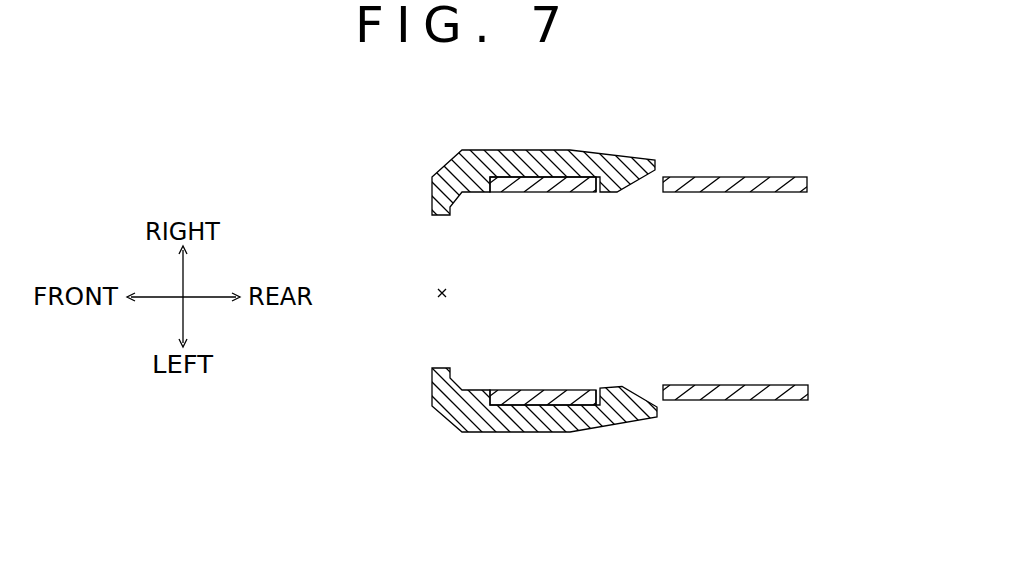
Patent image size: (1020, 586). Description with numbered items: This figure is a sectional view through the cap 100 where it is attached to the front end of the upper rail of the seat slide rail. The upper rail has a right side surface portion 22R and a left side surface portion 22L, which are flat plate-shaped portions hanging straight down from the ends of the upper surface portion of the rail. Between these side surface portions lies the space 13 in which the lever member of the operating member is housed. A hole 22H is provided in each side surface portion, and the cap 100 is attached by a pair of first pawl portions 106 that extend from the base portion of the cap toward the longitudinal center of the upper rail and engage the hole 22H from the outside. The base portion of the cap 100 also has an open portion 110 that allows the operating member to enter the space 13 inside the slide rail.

The cap 100 is at (421, 147).
The space 13 is at (543, 297).
The hole 22H is at (614, 163).
The right side surface portion 22R is at (752, 182).
The left side surface portion 22L is at (755, 393).
The first pawl portion 106 is at (606, 186).
The open portion 110 is at (440, 293).